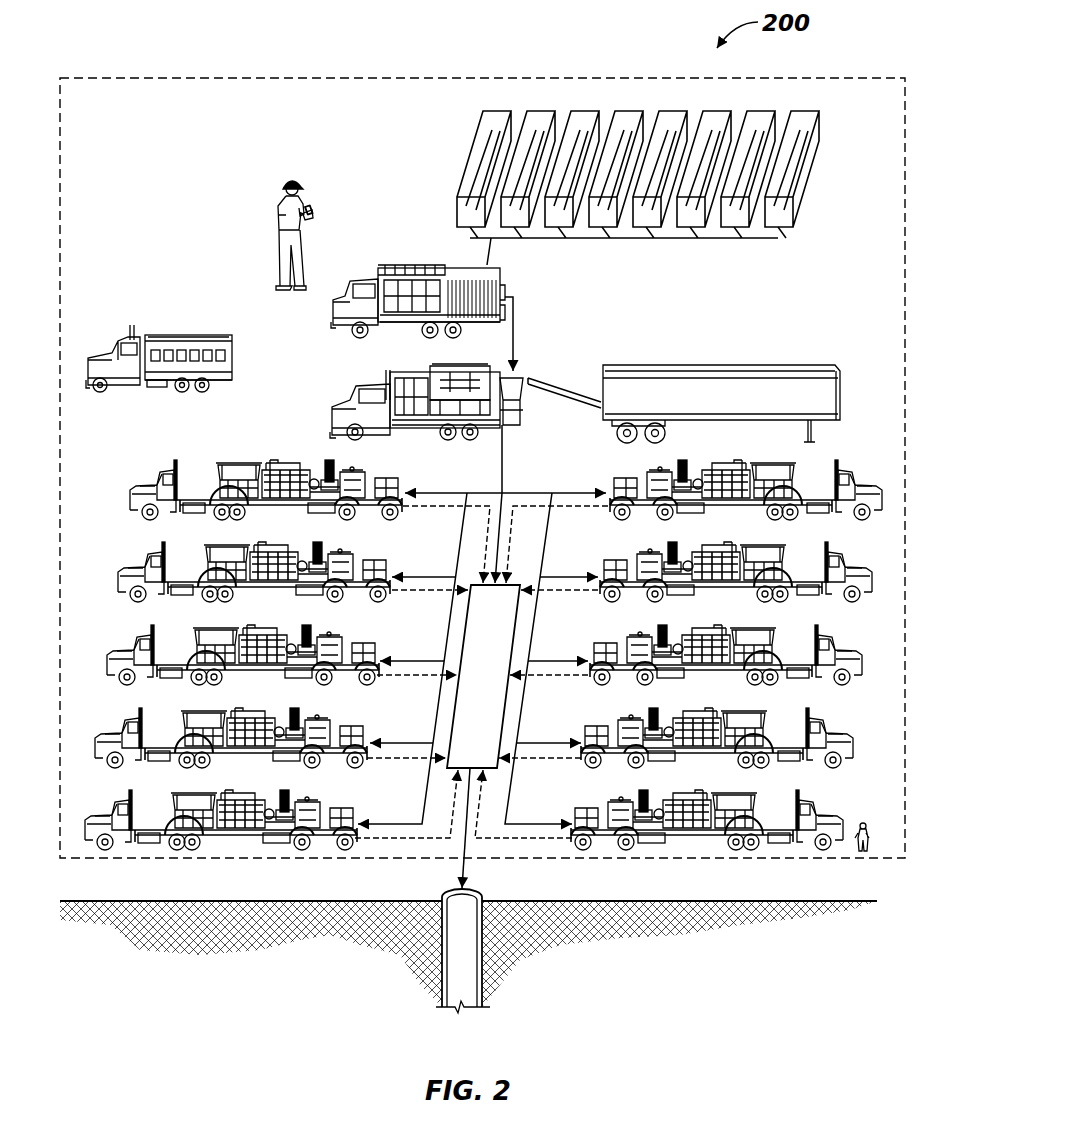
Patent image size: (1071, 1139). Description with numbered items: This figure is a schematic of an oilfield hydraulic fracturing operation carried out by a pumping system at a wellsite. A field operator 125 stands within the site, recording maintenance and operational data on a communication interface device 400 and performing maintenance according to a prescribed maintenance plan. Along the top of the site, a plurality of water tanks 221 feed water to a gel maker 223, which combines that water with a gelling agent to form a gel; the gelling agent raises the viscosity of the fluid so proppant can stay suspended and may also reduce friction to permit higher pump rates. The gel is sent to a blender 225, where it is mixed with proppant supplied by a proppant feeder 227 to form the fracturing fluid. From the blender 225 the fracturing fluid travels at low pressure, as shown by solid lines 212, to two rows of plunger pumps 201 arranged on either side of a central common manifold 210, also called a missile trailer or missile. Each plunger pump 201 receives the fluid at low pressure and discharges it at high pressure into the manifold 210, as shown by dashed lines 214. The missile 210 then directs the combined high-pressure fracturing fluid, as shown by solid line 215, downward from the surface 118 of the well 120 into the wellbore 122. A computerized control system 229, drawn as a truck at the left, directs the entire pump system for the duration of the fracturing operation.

The water tanks 221 is at (494, 112).
The field operator 125 is at (270, 202).
The communication interface device 400 is at (314, 201).
The computerized control system 229 is at (192, 337).
The gel maker 223 is at (508, 290).
The blender 225 is at (382, 380).
The proppant feeder 227 is at (709, 366).
The plunger pumps 201 is at (137, 492).
The solid lines 212 is at (505, 470).
The dashed lines 214 is at (460, 516).
The common manifold 210 is at (478, 637).
The solid line 215 is at (460, 870).
The surface 118 is at (209, 900).
The well 120 is at (479, 958).
The wellbore 122 is at (456, 965).